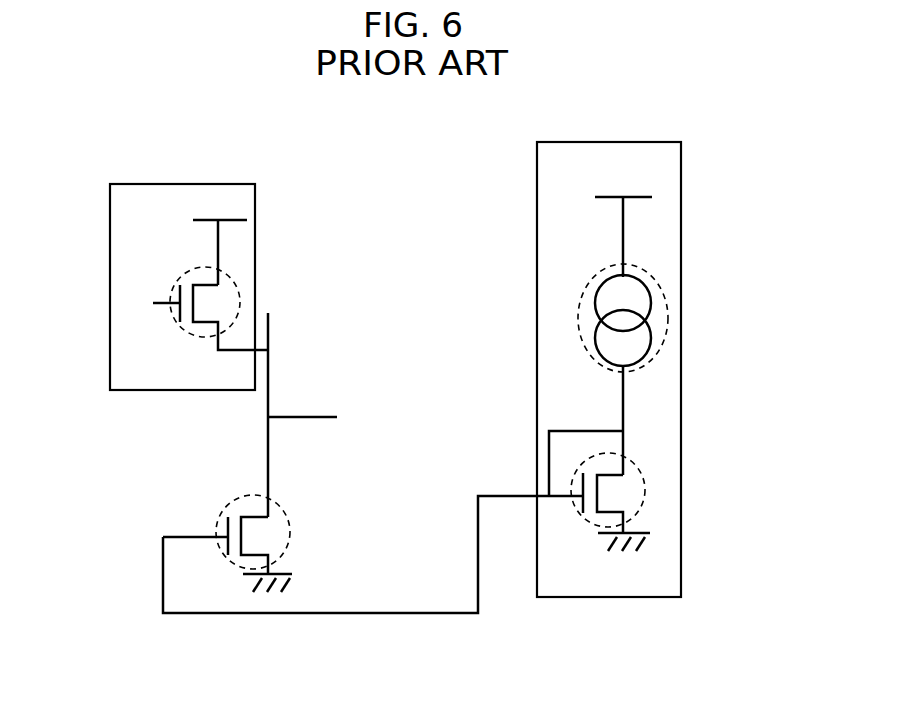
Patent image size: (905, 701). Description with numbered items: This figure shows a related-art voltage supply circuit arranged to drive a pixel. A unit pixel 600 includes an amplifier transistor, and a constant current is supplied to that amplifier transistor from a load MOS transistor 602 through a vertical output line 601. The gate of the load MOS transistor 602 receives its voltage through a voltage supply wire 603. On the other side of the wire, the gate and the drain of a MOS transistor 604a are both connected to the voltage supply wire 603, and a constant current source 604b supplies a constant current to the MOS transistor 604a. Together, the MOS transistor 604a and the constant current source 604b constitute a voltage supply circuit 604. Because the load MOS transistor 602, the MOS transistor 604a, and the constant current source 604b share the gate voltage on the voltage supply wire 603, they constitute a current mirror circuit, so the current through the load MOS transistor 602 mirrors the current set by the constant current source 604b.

The unit pixel 600 is at (110, 215).
The vertical output line 601 is at (268, 440).
The load MOS transistor 602 is at (287, 522).
The voltage supply wire 603 is at (350, 614).
The voltage supply circuit 604 is at (682, 229).
The MOS transistor 604a is at (643, 480).
The constant current source 604b is at (677, 320).